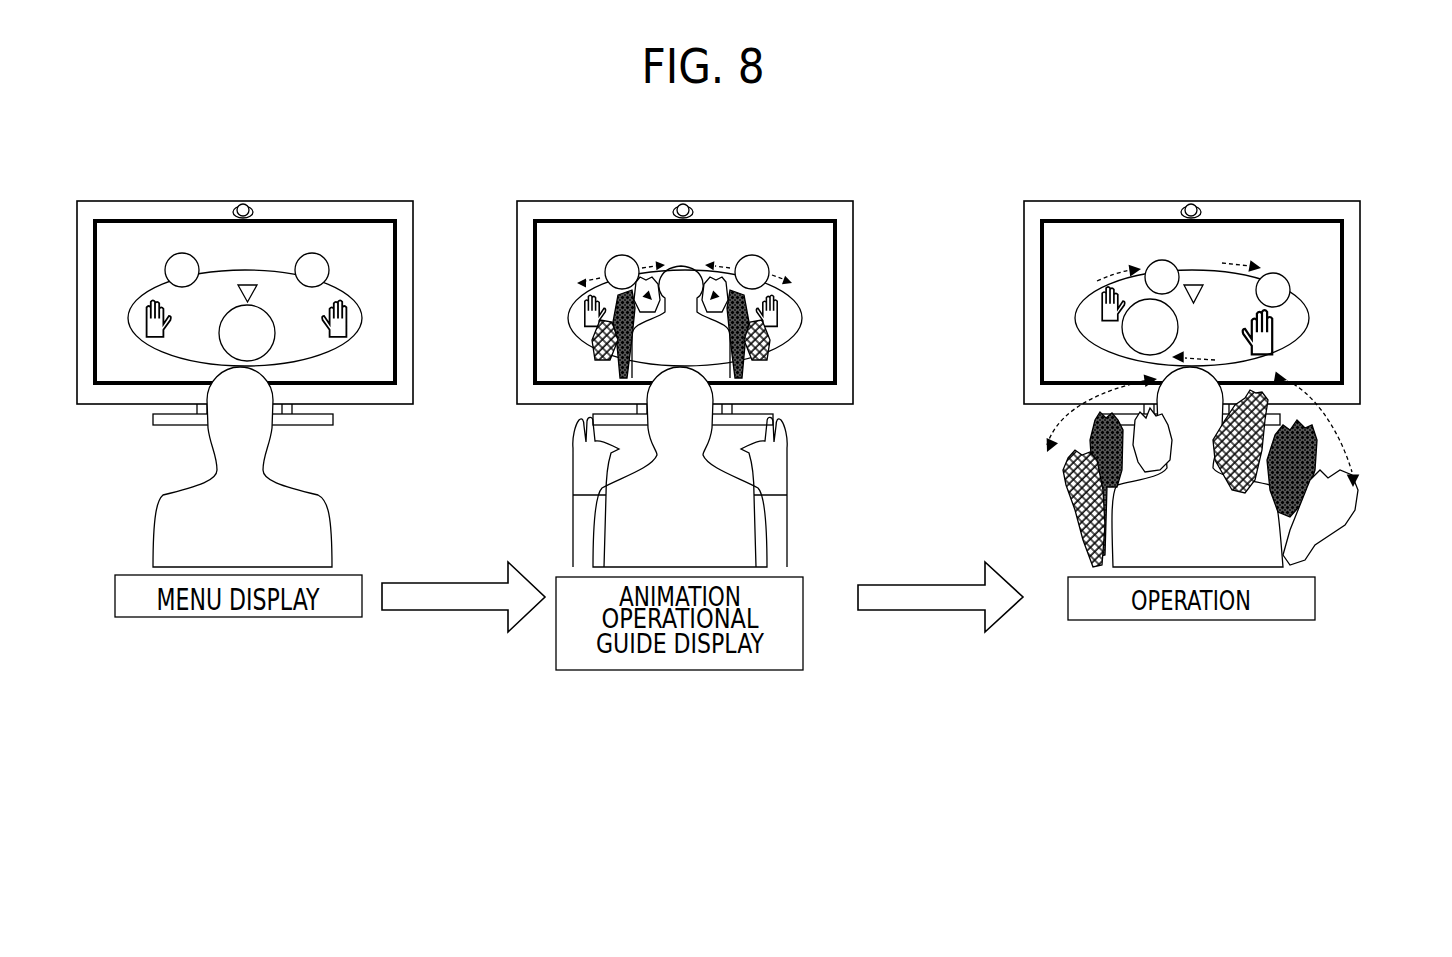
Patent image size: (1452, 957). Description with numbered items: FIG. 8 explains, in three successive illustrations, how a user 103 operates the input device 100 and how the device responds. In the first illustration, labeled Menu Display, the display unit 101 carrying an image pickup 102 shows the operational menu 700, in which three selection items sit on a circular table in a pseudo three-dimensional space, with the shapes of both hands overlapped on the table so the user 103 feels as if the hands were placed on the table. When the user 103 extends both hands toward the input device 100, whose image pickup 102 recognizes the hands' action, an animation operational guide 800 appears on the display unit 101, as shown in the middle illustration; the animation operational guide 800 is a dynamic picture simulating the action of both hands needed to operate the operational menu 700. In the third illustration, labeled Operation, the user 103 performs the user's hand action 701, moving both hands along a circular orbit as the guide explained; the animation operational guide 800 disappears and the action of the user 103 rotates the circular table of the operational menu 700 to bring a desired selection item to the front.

The input device 100 is at (413, 227).
The display unit 101 is at (397, 267).
The image pickup 102 is at (243, 203).
The user 103 is at (332, 513).
The operational menu 700 is at (360, 320).
The user's hand action 701 is at (1337, 427).
The animation operational guide 800 is at (740, 367).